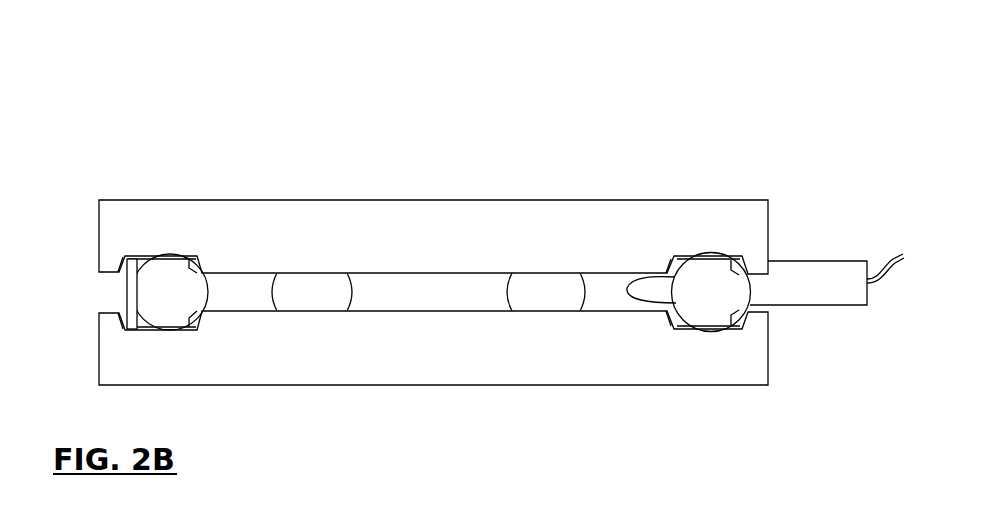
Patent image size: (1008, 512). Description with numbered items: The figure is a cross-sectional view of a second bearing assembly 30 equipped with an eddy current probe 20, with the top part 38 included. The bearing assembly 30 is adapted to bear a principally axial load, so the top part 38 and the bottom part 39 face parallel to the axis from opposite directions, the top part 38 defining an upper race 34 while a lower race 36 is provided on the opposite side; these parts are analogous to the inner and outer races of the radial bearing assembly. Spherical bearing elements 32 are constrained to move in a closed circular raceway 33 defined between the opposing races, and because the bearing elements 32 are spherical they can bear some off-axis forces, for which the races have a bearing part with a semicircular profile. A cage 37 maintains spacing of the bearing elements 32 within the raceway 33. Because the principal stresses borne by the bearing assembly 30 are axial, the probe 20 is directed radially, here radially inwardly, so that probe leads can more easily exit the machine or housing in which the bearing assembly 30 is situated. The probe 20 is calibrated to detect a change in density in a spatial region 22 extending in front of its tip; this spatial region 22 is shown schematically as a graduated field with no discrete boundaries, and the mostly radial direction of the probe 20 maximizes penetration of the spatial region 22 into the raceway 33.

The probe 20 is at (827, 270).
The spatial region 22 is at (653, 287).
The bearing assembly 30 is at (186, 146).
The bearing elements 32 is at (327, 304).
The raceway 33 is at (112, 299).
The upper race 34 is at (690, 254).
The lower race 36 is at (687, 330).
The cage 37 is at (130, 289).
The top part 38 is at (303, 233).
The bottom part 39 is at (610, 374).